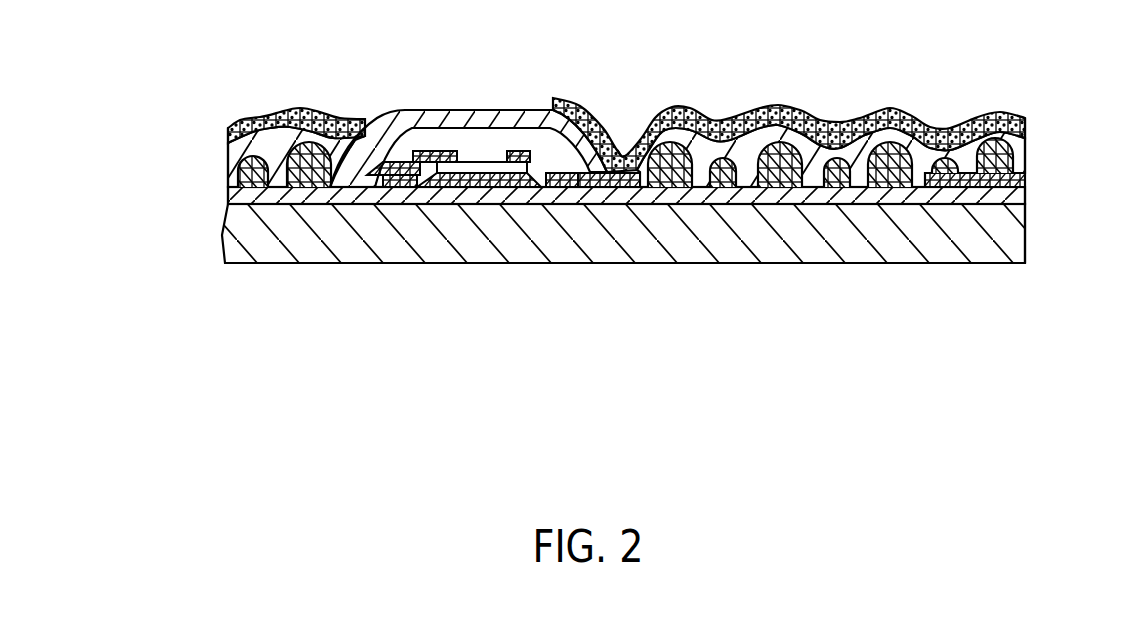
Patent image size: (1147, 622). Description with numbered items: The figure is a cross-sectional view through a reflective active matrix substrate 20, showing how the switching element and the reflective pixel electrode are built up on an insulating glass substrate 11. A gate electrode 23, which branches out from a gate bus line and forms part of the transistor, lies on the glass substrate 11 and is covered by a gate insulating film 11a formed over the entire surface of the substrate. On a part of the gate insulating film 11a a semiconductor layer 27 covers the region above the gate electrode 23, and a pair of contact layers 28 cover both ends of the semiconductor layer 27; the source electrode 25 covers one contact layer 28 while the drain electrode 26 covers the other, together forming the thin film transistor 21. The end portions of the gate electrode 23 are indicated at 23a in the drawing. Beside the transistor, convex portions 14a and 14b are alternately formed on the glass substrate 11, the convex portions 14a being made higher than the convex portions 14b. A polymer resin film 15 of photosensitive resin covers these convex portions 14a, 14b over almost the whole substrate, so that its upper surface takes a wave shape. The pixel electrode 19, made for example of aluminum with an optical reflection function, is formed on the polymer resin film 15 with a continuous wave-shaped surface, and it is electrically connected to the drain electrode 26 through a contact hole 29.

The glass substrate 11 is at (983, 246).
The gate insulating film 11a is at (1013, 199).
The convex portions 14a is at (780, 178).
The convex portions 14b is at (833, 178).
The polymer resin film 15 is at (238, 152).
The pixel electrode 19 is at (272, 114).
The reflective active matrix substrate 20 is at (178, 326).
The thin film transistor 21 is at (455, 88).
The gate electrode 23 is at (482, 186).
The wiring end portions 23a is at (449, 190).
The source electrode 25 is at (350, 188).
The drain electrode 26 is at (621, 184).
The semiconductor layer 27 is at (486, 170).
The contact layers 28 is at (415, 150).
The contact hole 29 is at (629, 114).